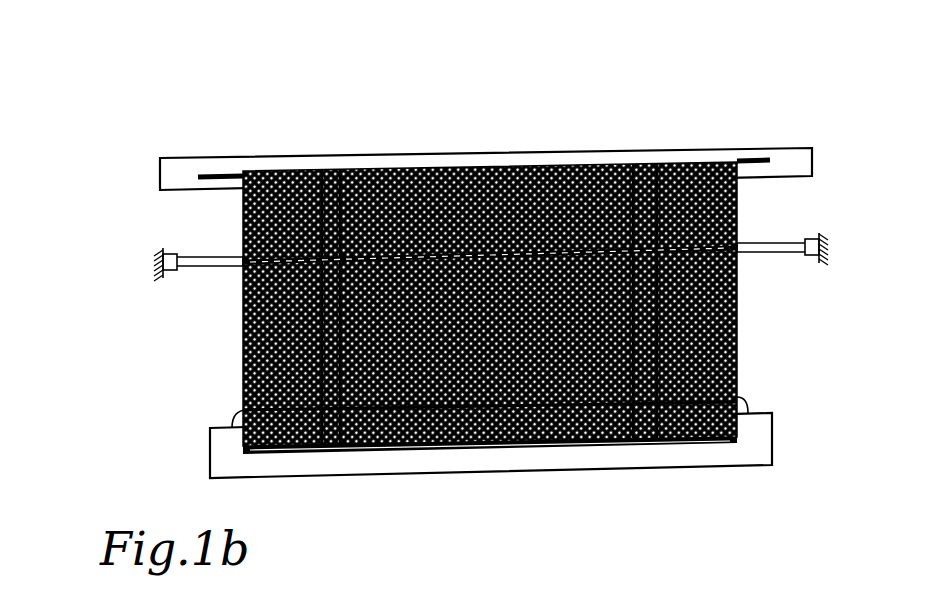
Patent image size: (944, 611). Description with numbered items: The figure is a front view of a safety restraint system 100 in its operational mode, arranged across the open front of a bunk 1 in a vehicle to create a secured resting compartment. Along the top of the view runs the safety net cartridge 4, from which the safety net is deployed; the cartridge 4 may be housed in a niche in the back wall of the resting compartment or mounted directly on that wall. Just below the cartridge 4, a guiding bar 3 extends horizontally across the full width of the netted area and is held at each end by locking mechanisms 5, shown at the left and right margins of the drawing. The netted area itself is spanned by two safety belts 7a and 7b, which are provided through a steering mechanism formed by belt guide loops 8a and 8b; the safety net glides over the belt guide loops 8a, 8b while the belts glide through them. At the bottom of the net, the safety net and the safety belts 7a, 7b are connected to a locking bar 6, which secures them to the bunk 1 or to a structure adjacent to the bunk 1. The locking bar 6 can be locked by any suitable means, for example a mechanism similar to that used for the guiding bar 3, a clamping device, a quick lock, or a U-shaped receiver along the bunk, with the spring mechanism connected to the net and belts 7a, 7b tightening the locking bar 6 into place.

The safety restraint system 100 is at (140, 126).
The bunk 1 is at (760, 430).
The guiding bar 3 is at (207, 262).
The safety net cartridge 4 is at (700, 150).
The locking mechanisms 5 is at (170, 273).
The locking bar 6 is at (373, 447).
The safety belt 7a is at (490, 304).
The safety belt 7b is at (486, 305).
The belt guide loop 8a is at (318, 308).
The belt guide loop 8b is at (656, 300).